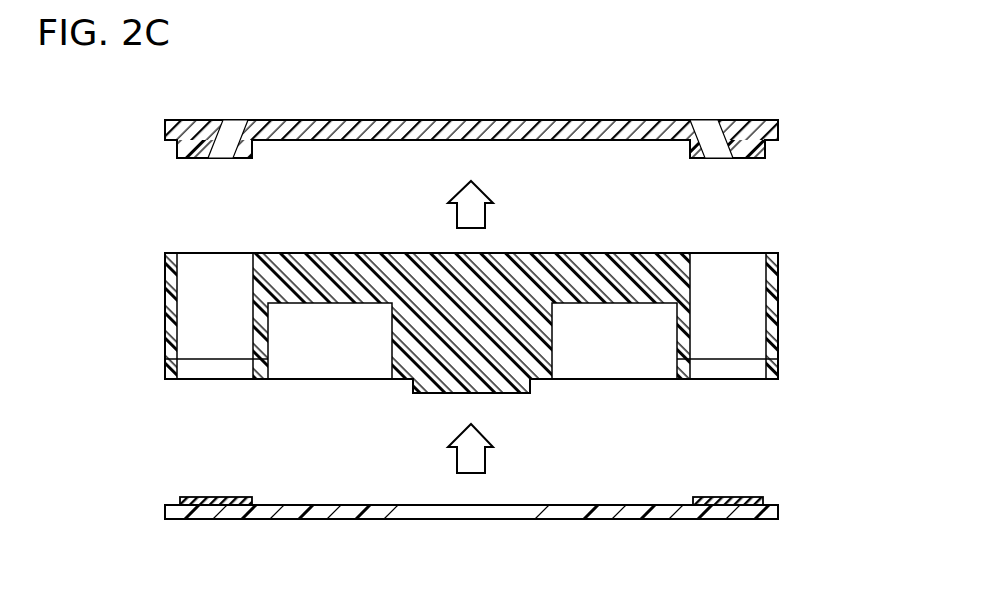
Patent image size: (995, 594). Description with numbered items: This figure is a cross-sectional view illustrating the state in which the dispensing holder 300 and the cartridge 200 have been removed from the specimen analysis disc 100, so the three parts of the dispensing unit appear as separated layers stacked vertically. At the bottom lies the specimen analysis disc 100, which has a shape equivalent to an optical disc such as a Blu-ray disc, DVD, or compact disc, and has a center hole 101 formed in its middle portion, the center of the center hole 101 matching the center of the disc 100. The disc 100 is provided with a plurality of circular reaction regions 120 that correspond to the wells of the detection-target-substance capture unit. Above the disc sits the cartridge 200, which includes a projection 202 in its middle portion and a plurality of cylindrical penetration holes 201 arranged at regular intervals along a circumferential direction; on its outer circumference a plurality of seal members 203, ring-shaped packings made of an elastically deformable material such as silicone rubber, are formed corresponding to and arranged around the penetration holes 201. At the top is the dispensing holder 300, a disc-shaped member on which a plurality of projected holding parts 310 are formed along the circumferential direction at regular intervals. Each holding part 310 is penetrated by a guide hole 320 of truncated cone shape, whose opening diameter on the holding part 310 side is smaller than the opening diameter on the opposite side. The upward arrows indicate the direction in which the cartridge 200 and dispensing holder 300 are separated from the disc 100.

The specimen analysis disc 100 is at (752, 520).
The center hole 101 is at (533, 511).
The reaction region 120 is at (217, 497).
The cartridge 200 is at (778, 318).
The penetration hole 201 is at (254, 261).
The projection 202 is at (518, 393).
The seal member 203 is at (167, 362).
The dispensing holder 300 is at (778, 128).
The holding part 310 is at (177, 147).
The guide hole 320 is at (243, 128).